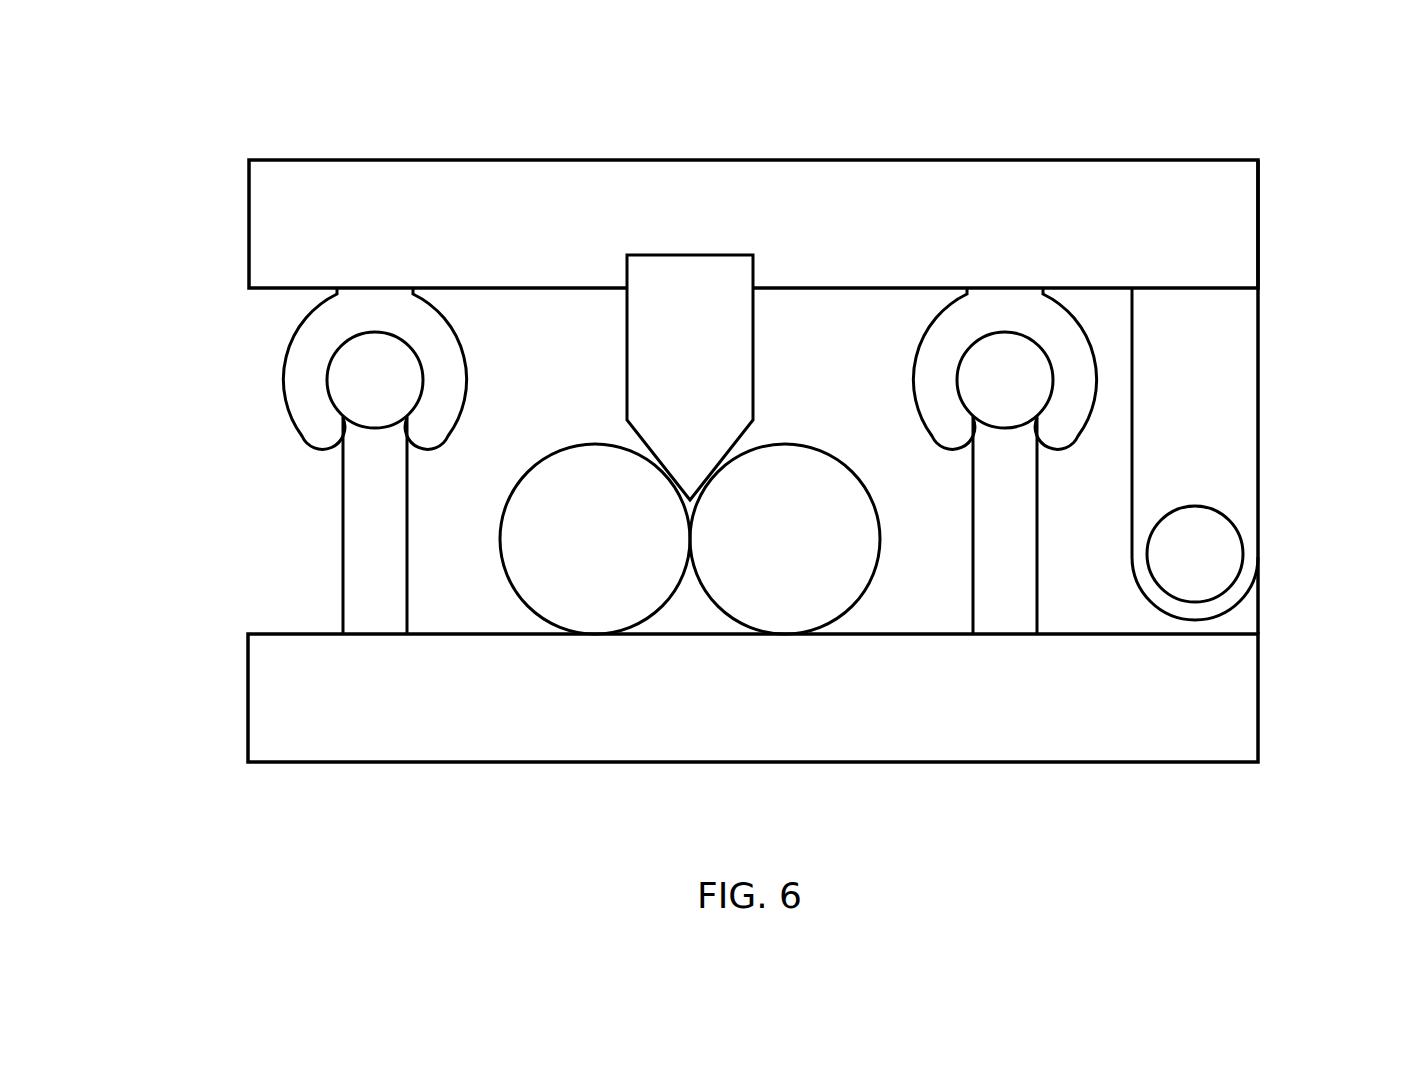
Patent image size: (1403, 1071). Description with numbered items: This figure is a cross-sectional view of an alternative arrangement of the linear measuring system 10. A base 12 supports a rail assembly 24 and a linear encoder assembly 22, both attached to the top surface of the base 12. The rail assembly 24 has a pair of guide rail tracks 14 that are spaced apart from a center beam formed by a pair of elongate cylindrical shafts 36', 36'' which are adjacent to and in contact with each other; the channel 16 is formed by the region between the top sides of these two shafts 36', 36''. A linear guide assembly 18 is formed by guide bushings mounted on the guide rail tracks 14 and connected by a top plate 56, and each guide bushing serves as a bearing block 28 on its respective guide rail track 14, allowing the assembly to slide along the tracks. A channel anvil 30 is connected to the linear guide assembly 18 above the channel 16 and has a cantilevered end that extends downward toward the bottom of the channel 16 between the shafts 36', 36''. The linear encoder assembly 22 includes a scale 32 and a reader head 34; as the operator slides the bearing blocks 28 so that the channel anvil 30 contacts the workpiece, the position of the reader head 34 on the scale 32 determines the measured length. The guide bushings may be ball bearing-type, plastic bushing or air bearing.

The linear measuring system 10 is at (186, 75).
The base 12 is at (348, 738).
The guide rail tracks 14 is at (358, 380).
The channel 16 is at (531, 640).
The linear guide assembly 18 is at (685, 200).
The linear encoder assembly 22 is at (1188, 463).
The rail assembly 24 is at (478, 582).
The bearing block 28 is at (759, 405).
The channel anvil 30 is at (670, 312).
The scale 32 is at (1210, 547).
The reader head 34 is at (1248, 595).
The cylindrical shaft 36' is at (554, 640).
The cylindrical shaft 36'' is at (746, 640).
The top plate 56 is at (818, 177).